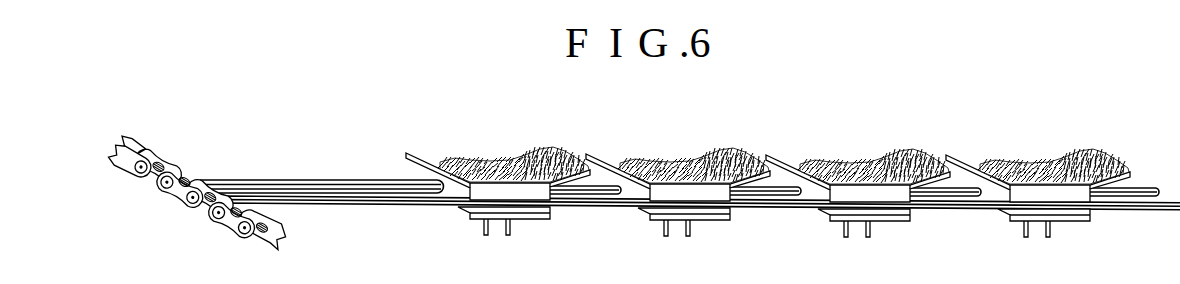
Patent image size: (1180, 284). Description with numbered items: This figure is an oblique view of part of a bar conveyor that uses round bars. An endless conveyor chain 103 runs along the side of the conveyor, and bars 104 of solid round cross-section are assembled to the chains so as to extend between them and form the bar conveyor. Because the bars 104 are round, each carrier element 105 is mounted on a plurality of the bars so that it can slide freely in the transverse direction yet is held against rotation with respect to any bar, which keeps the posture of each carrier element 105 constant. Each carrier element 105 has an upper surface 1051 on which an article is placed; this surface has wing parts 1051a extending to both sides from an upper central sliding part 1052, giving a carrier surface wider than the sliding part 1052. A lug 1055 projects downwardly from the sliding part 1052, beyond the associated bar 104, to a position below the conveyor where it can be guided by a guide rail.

The endless conveyor chain 103 is at (162, 157).
The bar 104 is at (304, 180).
The carrier element 105 is at (671, 163).
The upper surface 1051 is at (497, 189).
The wing part 1051a is at (562, 160).
The sliding part 1052 is at (545, 219).
The lug 1055 is at (483, 230).